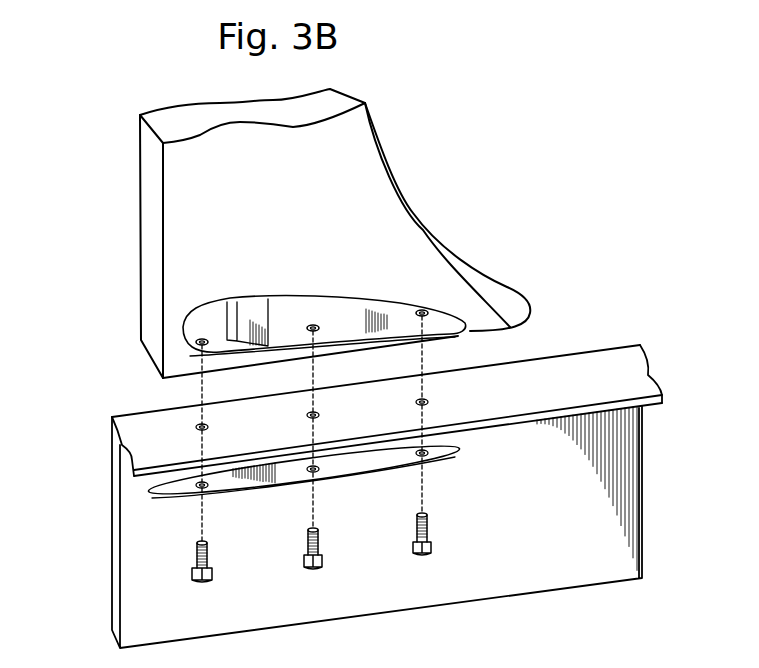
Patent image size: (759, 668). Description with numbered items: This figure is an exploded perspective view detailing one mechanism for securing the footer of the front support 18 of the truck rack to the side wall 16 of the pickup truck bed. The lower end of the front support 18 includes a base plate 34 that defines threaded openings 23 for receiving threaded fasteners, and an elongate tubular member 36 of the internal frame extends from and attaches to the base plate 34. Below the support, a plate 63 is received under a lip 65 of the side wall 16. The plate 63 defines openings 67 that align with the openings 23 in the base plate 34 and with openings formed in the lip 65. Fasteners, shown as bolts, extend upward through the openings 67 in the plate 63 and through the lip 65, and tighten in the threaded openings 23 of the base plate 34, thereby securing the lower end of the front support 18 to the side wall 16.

The front support 18 is at (348, 198).
The elongate tubular member 36 is at (248, 318).
The openings 23 is at (198, 343).
The base plate 34 is at (442, 318).
The lip 65 is at (610, 367).
The side wall 16 is at (610, 455).
The openings 67 is at (197, 477).
The plate 63 is at (172, 487).